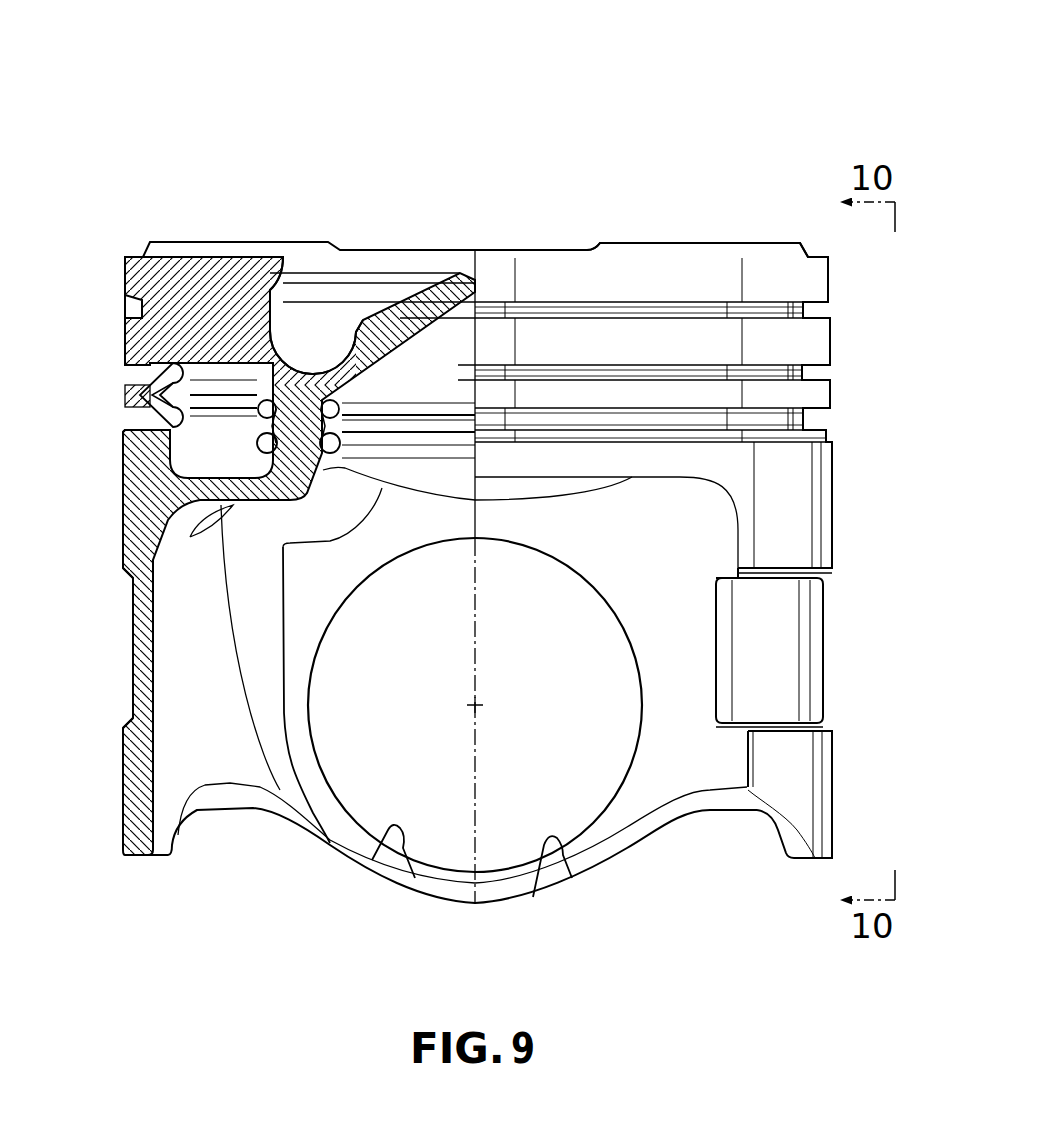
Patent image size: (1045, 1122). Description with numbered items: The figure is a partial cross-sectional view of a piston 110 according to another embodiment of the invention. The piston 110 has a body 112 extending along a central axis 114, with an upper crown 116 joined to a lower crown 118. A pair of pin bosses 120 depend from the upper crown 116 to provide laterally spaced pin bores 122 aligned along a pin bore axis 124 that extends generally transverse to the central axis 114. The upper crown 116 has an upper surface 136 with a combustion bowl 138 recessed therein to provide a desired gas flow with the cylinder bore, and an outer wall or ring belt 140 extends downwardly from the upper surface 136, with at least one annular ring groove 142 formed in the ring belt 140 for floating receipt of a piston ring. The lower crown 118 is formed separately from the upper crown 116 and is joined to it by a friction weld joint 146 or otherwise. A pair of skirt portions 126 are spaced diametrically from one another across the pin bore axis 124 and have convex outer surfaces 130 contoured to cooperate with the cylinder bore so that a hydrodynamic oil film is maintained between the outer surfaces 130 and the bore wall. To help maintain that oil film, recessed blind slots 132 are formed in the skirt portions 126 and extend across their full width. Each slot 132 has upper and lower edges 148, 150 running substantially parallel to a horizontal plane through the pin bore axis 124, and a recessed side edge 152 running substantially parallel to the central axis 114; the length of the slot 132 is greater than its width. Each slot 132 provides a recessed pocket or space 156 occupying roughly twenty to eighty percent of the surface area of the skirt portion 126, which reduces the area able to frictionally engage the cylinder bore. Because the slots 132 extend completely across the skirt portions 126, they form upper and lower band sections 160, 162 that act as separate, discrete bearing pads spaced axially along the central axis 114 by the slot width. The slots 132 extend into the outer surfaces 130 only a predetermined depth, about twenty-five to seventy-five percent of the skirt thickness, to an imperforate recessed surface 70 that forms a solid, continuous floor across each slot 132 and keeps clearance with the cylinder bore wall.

The piston 110 is at (745, 138).
The body 112 is at (158, 248).
The central axis 114 is at (478, 786).
The upper crown 116 is at (128, 278).
The lower crown 118 is at (125, 447).
The pin bosses 120 is at (602, 848).
The pin bores 122 is at (533, 897).
The pin bore axis 124 is at (478, 702).
The skirt portions 126 is at (123, 783).
The outer surfaces 130 is at (832, 556).
The recessed slots 132 is at (792, 687).
The upper surface 136 is at (653, 243).
The combustion bowl 138 is at (333, 312).
The ring belt 140 is at (837, 257).
The annular ring groove 142 is at (130, 373).
The friction weld joint 146 is at (257, 422).
The upper edge 148 is at (812, 574).
The lower edge 150 is at (810, 731).
The recessed side edge 152 is at (714, 652).
The space 156 is at (123, 692).
The upper band section 160 is at (805, 487).
The lower band section 162 is at (800, 782).
The recessed surface 70 is at (123, 613).